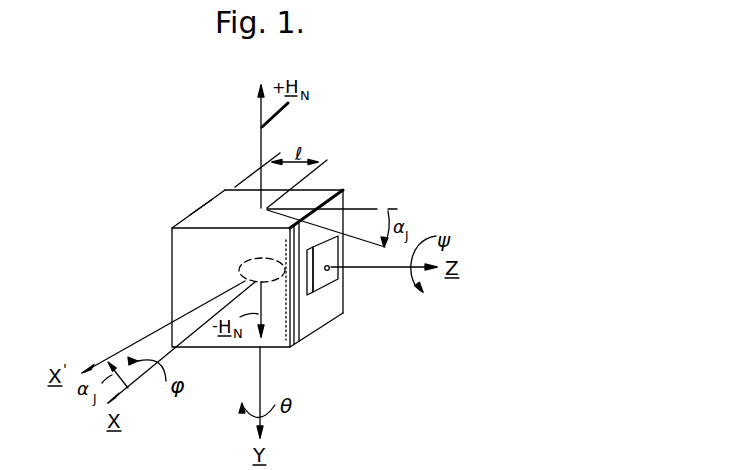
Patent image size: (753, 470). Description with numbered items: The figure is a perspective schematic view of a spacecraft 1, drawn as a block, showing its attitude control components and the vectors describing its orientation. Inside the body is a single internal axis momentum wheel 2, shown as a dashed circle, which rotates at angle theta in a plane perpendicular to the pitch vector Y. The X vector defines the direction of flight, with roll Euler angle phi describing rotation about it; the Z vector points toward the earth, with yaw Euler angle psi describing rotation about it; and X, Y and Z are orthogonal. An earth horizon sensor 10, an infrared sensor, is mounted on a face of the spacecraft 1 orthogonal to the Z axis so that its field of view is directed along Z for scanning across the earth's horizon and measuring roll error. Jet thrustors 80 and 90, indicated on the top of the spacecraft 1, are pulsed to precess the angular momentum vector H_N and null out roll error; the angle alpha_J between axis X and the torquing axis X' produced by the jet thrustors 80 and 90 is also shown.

The spacecraft 1 is at (302, 328).
The momentum wheel 2 is at (240, 277).
The earth horizon sensor 10 is at (323, 279).
The jet thrustor 80 is at (212, 196).
The jet thrustor 90 is at (297, 212).